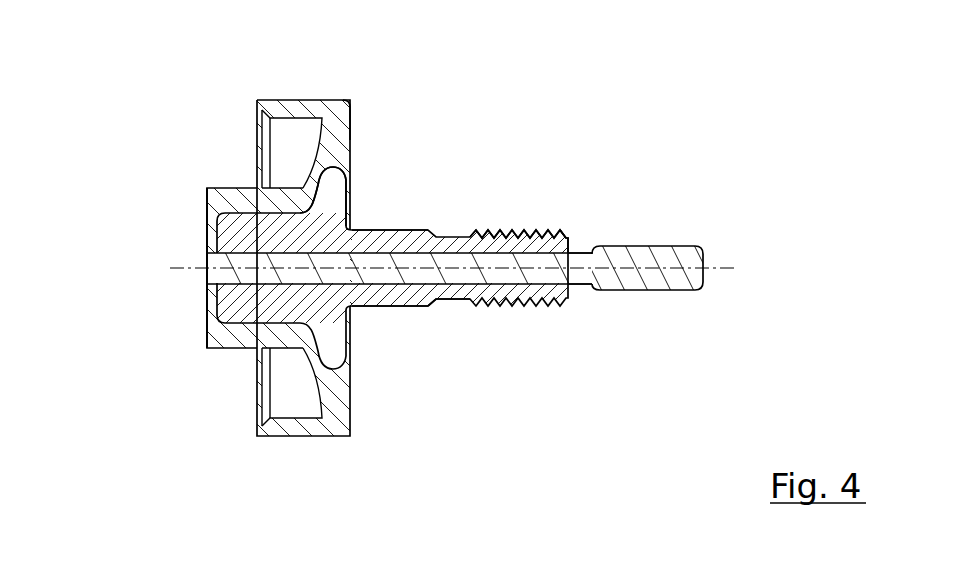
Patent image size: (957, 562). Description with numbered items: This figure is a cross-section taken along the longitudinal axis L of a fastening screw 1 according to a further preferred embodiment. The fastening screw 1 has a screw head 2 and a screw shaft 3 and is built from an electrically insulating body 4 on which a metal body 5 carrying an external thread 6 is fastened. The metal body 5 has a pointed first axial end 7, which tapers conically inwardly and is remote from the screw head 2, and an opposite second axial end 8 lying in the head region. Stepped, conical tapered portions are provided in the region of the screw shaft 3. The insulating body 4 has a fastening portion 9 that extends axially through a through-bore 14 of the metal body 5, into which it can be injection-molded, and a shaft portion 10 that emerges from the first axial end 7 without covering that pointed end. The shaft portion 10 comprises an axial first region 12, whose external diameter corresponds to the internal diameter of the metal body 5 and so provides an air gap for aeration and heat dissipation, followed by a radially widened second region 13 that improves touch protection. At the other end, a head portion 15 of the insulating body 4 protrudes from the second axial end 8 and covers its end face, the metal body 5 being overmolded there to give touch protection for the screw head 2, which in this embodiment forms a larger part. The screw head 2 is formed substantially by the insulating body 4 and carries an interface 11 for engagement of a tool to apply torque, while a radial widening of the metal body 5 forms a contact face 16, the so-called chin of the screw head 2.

The fastening screw 1 is at (115, 71).
The screw head 2 is at (299, 92).
The screw shaft 3 is at (504, 90).
The insulating body 4 is at (343, 100).
The metal body 5 is at (440, 300).
The external thread 6 is at (513, 228).
The first axial end 7 is at (572, 248).
The second axial end 8 is at (257, 182).
The fastening portion 9 is at (569, 447).
The shaft portion 10 is at (702, 447).
The interface 11 is at (230, 350).
The first region 12 is at (596, 318).
The second region 13 is at (702, 318).
The through-bore 14 is at (378, 275).
The head portion 15 is at (207, 448).
The contact face 16 is at (352, 213).
The longitudinal axis L is at (185, 268).